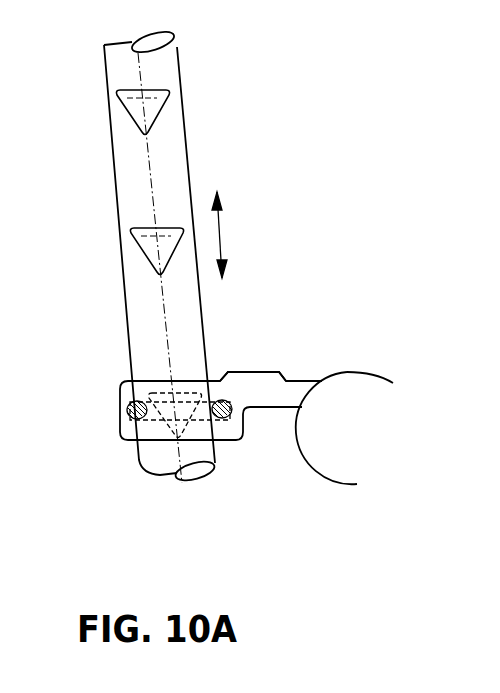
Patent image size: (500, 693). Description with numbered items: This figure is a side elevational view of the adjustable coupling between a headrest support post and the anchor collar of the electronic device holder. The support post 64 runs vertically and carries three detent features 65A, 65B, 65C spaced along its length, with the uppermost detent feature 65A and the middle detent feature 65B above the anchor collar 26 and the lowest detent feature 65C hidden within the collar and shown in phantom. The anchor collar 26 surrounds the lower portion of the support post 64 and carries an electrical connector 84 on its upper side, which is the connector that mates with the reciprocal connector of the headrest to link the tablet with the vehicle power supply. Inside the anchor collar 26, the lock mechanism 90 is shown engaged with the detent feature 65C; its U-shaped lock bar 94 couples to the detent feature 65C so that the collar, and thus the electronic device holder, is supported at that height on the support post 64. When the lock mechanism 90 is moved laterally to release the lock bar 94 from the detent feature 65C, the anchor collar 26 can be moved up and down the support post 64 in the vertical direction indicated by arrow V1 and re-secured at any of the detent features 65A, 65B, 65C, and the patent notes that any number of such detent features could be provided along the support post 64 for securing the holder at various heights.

The support post 64 is at (102, 65).
The detent feature 65A is at (135, 117).
The detent feature 65B is at (150, 253).
The detent feature 65C is at (176, 440).
The arrow V1 is at (218, 230).
The anchor collar 26 is at (123, 358).
The electrical connector 84 is at (247, 370).
The lock mechanism 90 is at (128, 412).
The U-shaped lock bar 94 is at (222, 409).